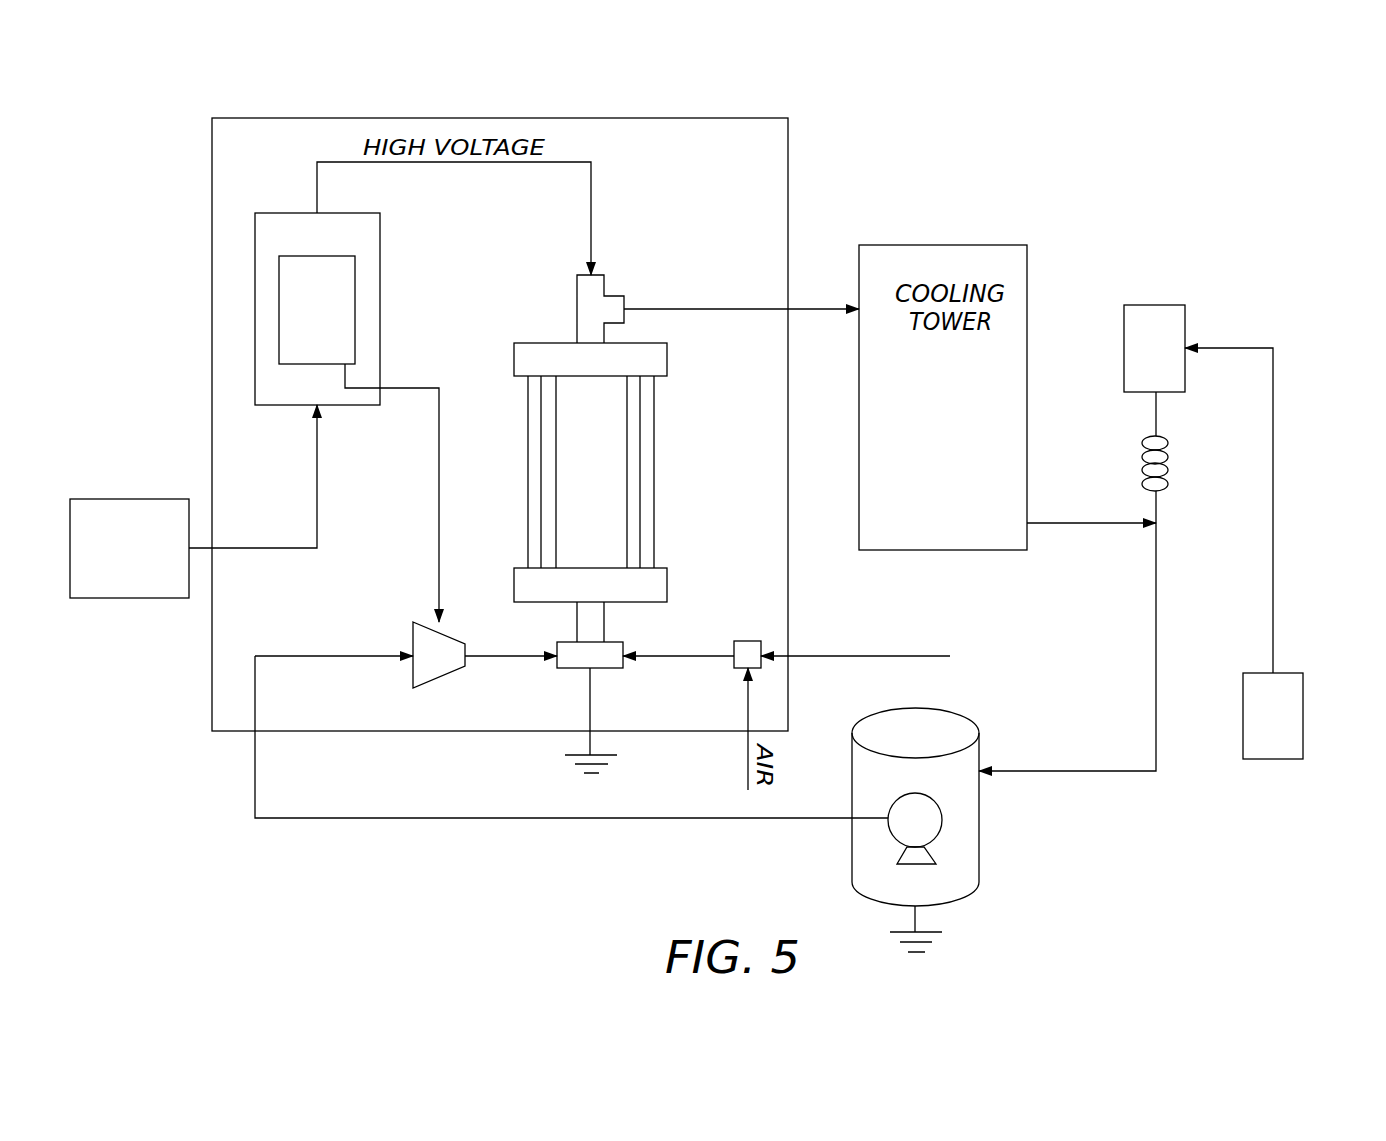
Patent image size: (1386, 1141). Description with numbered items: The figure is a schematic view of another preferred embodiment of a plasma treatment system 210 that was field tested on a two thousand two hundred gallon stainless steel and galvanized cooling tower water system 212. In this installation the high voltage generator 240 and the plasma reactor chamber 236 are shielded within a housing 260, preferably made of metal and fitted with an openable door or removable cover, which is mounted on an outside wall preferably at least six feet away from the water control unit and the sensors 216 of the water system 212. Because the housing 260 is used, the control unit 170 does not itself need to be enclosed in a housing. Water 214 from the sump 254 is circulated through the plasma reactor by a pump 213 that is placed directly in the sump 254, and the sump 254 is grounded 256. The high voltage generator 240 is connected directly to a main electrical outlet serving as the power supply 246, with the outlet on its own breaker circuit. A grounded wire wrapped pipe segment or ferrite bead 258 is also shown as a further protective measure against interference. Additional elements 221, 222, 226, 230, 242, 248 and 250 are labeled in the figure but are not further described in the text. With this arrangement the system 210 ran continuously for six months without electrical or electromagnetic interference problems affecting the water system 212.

The plasma treatment system 210 is at (187, 98).
The cooling tower water system 212 is at (1175, 847).
The pump 213 is at (893, 835).
The water 214 is at (255, 783).
The sensors 216 is at (1156, 305).
The venturi injector 221 is at (440, 678).
The air inlet valve 222 is at (743, 747).
The reactive gas inlet 226 is at (920, 652).
The ozone line 230 is at (438, 512).
The plasma reactor chamber 236 is at (675, 445).
The high voltage generator 240 is at (247, 325).
The ozone generator cell 242 is at (290, 280).
The power supply 246 is at (113, 598).
The ground 248 is at (610, 770).
The outlet conduit to cooling tower 250 is at (803, 309).
The sump 254 is at (979, 838).
The ground 256 is at (930, 935).
The ferrite bead 258 is at (1168, 470).
The housing 260 is at (508, 118).
The control unit 170 is at (1303, 713).